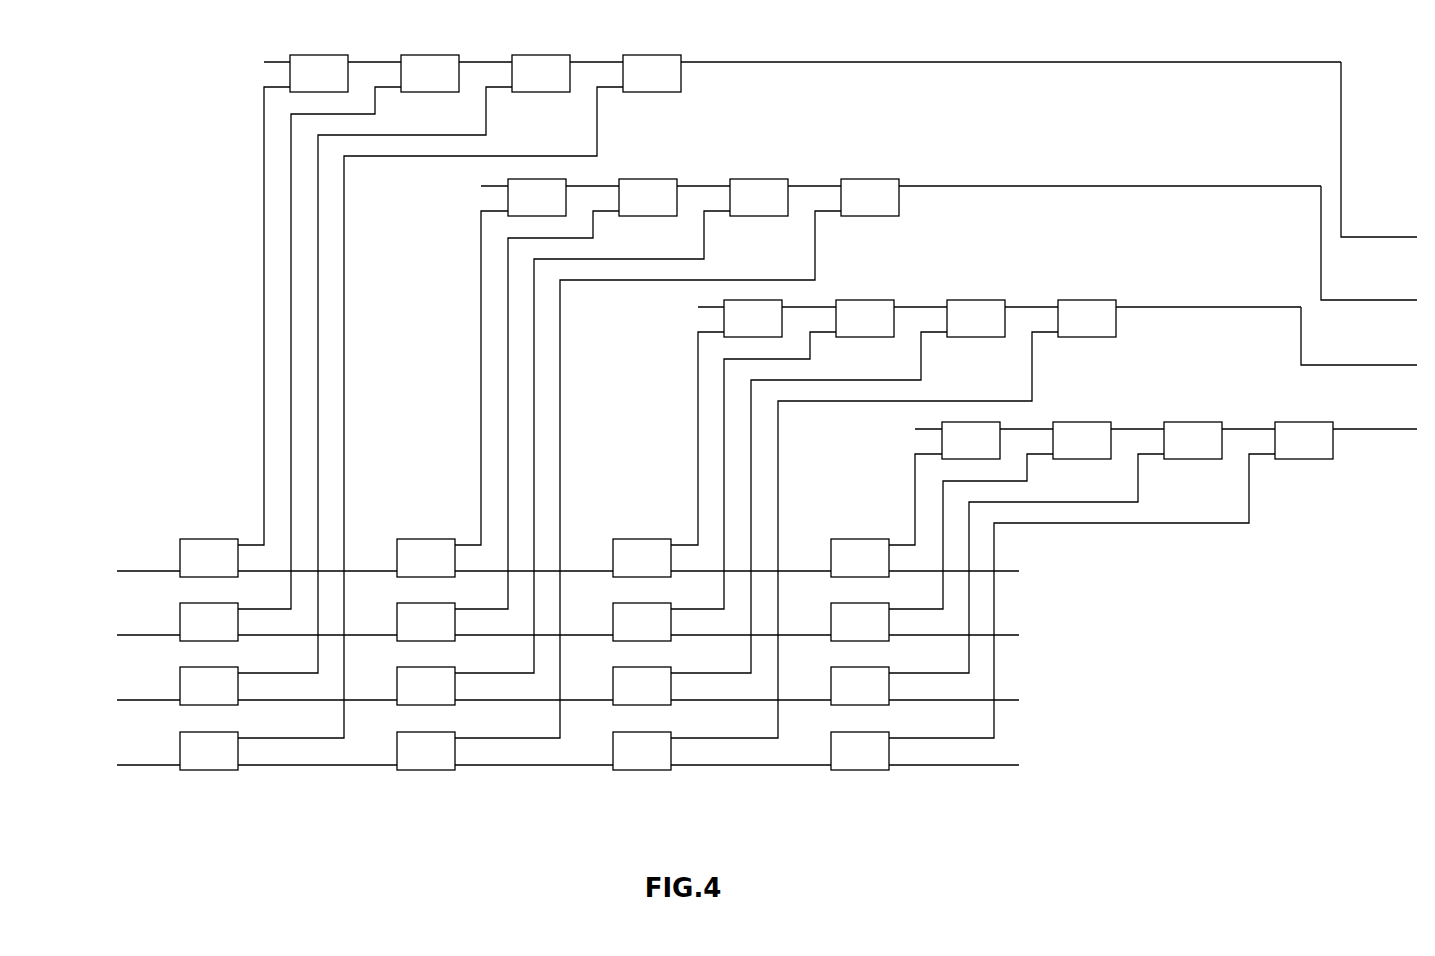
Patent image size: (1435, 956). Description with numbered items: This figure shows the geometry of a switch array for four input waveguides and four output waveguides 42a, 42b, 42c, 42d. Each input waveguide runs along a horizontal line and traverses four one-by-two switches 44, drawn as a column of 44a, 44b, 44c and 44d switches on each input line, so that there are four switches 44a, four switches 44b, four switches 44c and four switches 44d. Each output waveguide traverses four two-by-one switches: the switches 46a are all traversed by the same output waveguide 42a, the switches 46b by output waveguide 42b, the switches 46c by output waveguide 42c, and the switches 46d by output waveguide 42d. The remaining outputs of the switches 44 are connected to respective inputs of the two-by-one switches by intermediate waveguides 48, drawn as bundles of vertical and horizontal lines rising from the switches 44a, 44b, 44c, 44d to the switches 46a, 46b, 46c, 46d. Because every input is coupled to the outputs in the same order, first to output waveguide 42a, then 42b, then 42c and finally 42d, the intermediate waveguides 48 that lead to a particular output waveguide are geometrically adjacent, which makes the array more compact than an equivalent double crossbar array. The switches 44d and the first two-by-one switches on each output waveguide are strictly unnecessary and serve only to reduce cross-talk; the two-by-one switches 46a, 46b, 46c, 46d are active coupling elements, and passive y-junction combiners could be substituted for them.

The output waveguide 42a is at (1406, 237).
The output waveguide 42b is at (1406, 300).
The output waveguide 42c is at (1406, 365).
The output waveguide 42d is at (1406, 429).
The 1×2 switches 44 is at (162, 600).
The 1×2 switch 44a is at (192, 571).
The 1×2 switch 44b is at (409, 571).
The 1×2 switch 44c is at (625, 571).
The 1×2 switch 44d is at (843, 571).
The 2×1 switches 46a is at (302, 86).
The 2×1 switches 46b is at (520, 210).
The 2×1 switches 46c is at (736, 331).
The 2×1 switches 46d is at (954, 453).
The intermediate waveguides 48 is at (344, 303).